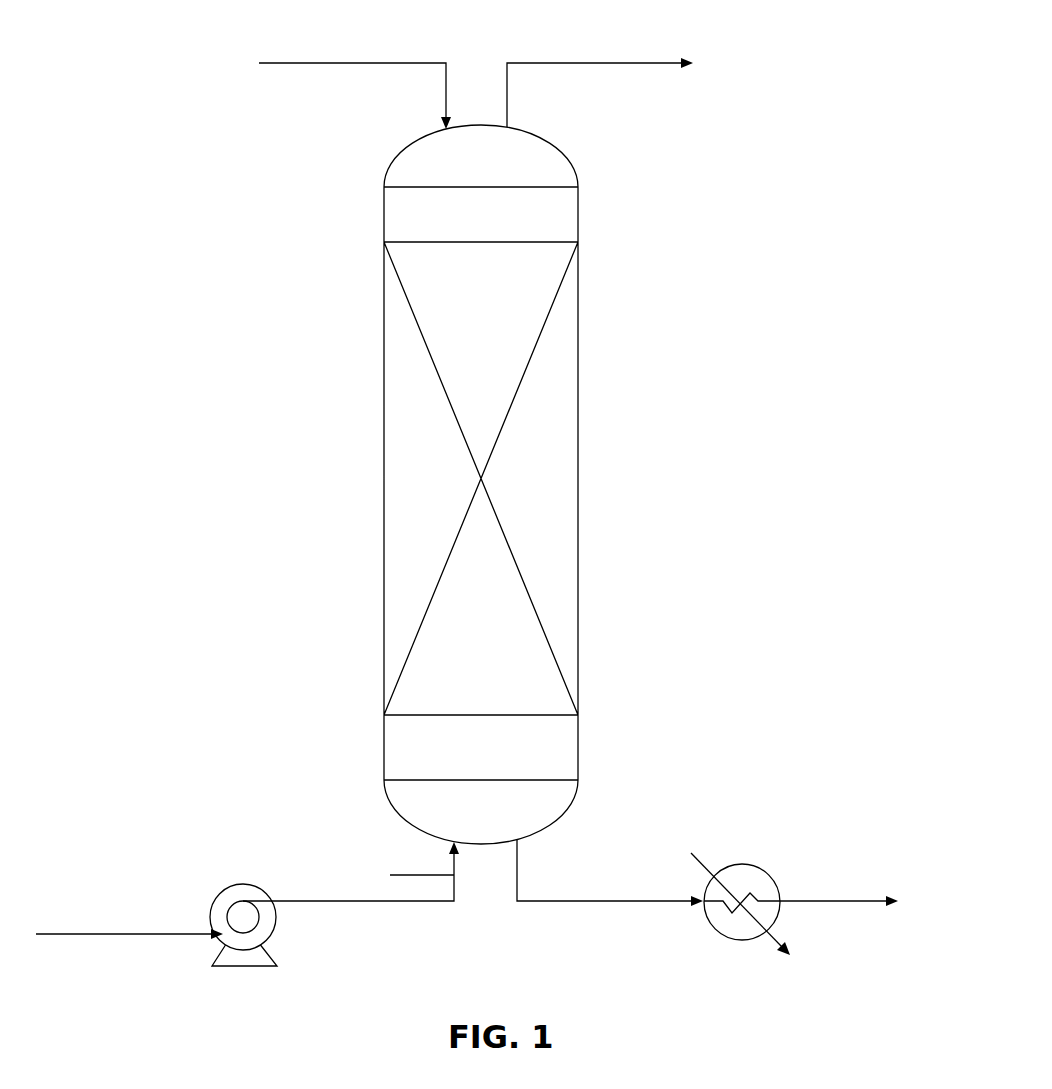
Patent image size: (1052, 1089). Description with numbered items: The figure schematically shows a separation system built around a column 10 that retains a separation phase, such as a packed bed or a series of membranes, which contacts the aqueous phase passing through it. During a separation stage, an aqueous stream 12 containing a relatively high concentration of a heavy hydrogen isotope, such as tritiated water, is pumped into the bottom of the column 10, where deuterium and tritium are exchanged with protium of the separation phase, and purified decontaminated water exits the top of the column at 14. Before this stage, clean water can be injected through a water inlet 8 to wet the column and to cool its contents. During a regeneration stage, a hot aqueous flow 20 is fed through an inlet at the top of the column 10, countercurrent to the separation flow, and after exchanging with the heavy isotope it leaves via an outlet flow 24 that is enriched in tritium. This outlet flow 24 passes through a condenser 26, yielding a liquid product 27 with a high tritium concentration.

The water inlet 8 is at (425, 875).
The column 10 is at (392, 292).
The aqueous stream 12 is at (160, 934).
The purified water outlet 14 is at (620, 63).
The hot aqueous flow 20 is at (357, 63).
The outlet flow 24 is at (637, 903).
The condenser 26 is at (716, 931).
The liquid product 27 is at (870, 901).